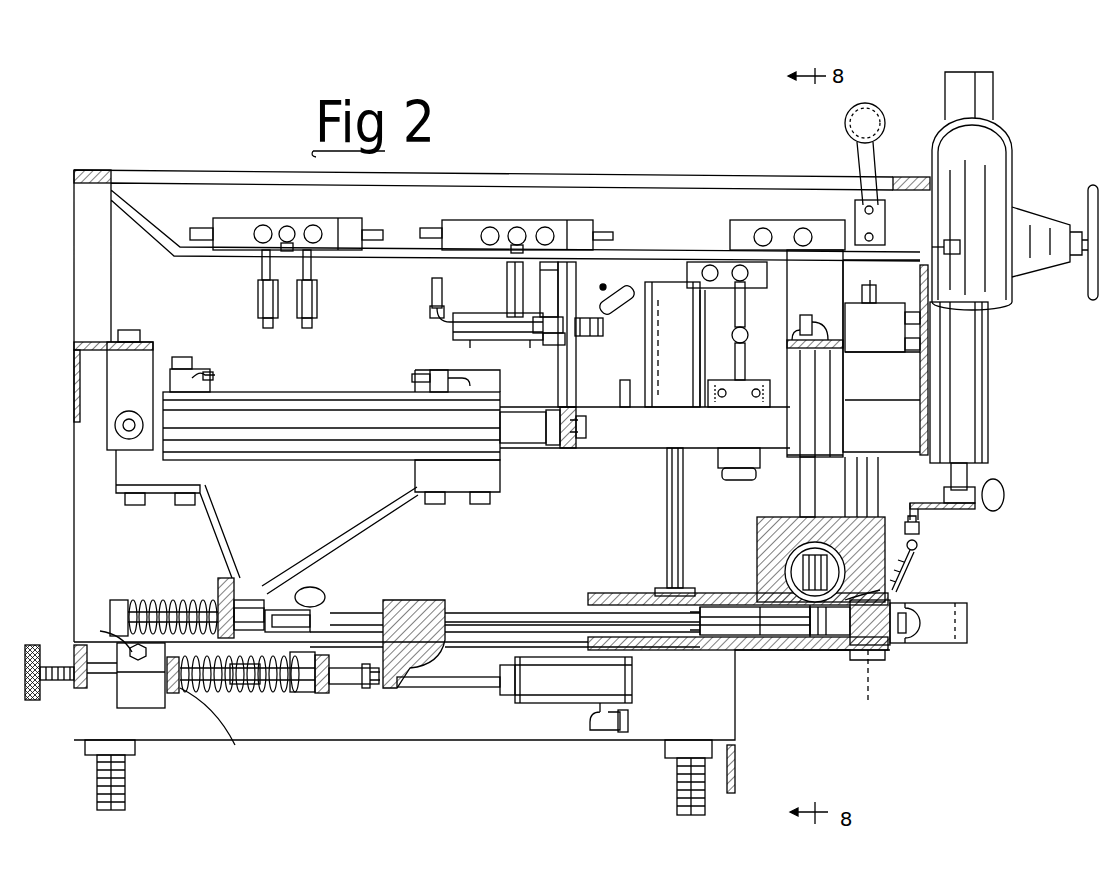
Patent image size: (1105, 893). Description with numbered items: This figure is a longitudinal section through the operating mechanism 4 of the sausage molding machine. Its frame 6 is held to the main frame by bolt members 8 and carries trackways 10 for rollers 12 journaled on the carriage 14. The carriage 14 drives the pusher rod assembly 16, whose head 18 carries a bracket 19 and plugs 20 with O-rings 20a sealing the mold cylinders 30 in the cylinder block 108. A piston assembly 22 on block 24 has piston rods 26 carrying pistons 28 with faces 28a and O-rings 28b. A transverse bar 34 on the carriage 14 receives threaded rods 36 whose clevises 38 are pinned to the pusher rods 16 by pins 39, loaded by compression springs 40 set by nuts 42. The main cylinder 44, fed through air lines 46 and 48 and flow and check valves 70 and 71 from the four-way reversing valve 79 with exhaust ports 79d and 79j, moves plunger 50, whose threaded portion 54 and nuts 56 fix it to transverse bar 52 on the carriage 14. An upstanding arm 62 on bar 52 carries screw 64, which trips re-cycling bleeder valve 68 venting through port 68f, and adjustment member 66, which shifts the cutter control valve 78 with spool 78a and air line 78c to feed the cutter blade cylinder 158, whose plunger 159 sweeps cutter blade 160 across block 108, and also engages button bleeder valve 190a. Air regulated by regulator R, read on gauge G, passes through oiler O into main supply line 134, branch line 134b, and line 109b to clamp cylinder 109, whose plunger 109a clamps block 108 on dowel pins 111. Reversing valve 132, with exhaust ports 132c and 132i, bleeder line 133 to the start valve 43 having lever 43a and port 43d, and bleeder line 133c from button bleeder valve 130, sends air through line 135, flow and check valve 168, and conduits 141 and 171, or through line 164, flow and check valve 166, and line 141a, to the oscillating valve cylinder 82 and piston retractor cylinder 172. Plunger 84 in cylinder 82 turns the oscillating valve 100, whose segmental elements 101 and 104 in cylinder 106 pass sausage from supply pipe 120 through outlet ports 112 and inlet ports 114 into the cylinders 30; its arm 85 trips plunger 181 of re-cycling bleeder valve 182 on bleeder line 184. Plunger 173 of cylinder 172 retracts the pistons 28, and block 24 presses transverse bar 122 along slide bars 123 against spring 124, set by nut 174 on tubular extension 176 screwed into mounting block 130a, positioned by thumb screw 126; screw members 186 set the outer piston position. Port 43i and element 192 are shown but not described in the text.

The machine 4 is at (48, 476).
The frame 6 is at (74, 280).
The legs 8 is at (125, 768).
The cross bar 10 is at (627, 448).
The slide block 12 is at (310, 665).
The bracket 14 is at (312, 508).
The push rod 16 is at (360, 632).
The stop 18 is at (915, 630).
The end block 19 is at (967, 638).
The bushing 20 is at (815, 624).
The bushing flange 20a is at (868, 645).
The inner rod 22 is at (488, 578).
The guide block 24 is at (425, 600).
The sleeve 26 is at (515, 613).
The guide ways 28 is at (755, 650).
The guide way portion 28a is at (812, 650).
The guide way portion 28b is at (718, 655).
The base portion 30 is at (835, 660).
The rod 34 is at (208, 598).
The block 36 is at (258, 598).
The cam 38 is at (306, 588).
The follower block 39 is at (305, 610).
The spring 40 is at (160, 598).
The spring seat 42 is at (112, 600).
The control valve 43 is at (783, 228).
The hand lever 43a is at (876, 160).
The valve port 43d is at (805, 228).
The valve port 43i is at (763, 228).
The air cylinder 44 is at (352, 410).
The air fitting 46 is at (262, 270).
The air fitting 48 is at (311, 268).
The piston rod 50 is at (530, 448).
The coupling 52 is at (566, 450).
The pin 54 is at (578, 418).
The clamp block 56 is at (585, 420).
The valve body 62 is at (566, 355).
The valve stem 64 is at (603, 330).
The fitting 66 is at (565, 340).
The conduit 68 is at (453, 335).
The valve block 68f is at (498, 330).
The valve 70 is at (258, 303).
The valve 71 is at (317, 303).
The support column 78 is at (675, 344).
The valve block 78a is at (712, 262).
The valve stem 78c is at (750, 312).
The valve manifold 79 is at (355, 228).
The port 79d is at (263, 226).
The port 79j is at (318, 228).
The rod 82 is at (655, 365).
The post 84 is at (683, 520).
The foot 85 is at (662, 588).
The bearing block 100 is at (728, 572).
The bearing 101 is at (880, 585).
The bore 104 is at (790, 562).
The rod 106 is at (860, 515).
The rod 108 is at (876, 517).
The cylinder 109 is at (830, 402).
The piston rod 109a is at (800, 495).
The fitting 109b is at (800, 315).
The center line 111 is at (870, 700).
The sleeve 112 is at (735, 622).
The set screw 114 is at (885, 592).
The nut 120 is at (919, 535).
The collar 122 is at (322, 693).
The pin 123 is at (350, 686).
The rod 124 is at (262, 693).
The adjusting knob 126 is at (66, 685).
The spring 130 is at (215, 693).
The housing 130a is at (140, 700).
The valve manifold 132 is at (580, 235).
The port 132c is at (490, 227).
The port 132i is at (548, 227).
The conduit 133 is at (430, 233).
The conduit 133c is at (612, 236).
The fitting 134 is at (517, 227).
The fitting 134b is at (289, 226).
The plate 135 is at (507, 290).
The handle 141 is at (610, 288).
The pin 141a is at (620, 388).
The cylinder 158 is at (975, 392).
The knob 159 is at (975, 490).
The screw 160 is at (920, 555).
The fitting 164 is at (546, 270).
The fitting 166 is at (548, 320).
The elbow 168 is at (430, 310).
The fitting 171 is at (590, 720).
The cylinder 172 is at (573, 680).
The piston rod 173 is at (448, 688).
The collar 174 is at (172, 693).
The conduit 176 is at (235, 750).
The base 181 is at (735, 478).
The switch 182 is at (745, 428).
The conduit 184 is at (200, 228).
The plate 186 is at (238, 580).
The valve 190a is at (920, 330).
The fitting 192 is at (372, 240).
The gas inlet G is at (945, 108).
The oil reservoir O is at (998, 135).
The regulator R is at (1025, 268).